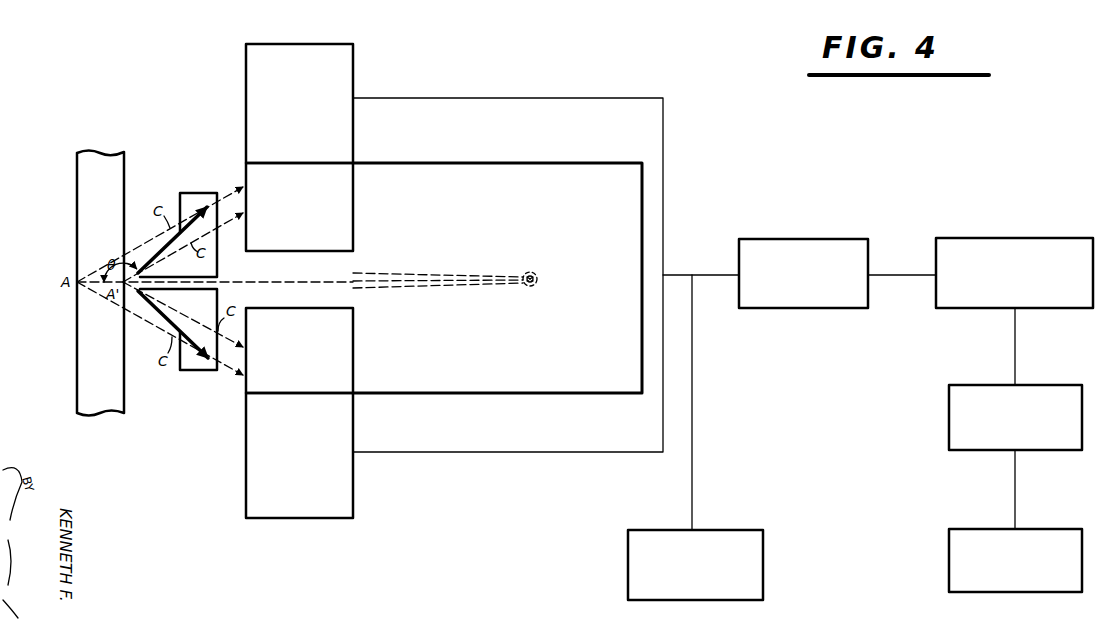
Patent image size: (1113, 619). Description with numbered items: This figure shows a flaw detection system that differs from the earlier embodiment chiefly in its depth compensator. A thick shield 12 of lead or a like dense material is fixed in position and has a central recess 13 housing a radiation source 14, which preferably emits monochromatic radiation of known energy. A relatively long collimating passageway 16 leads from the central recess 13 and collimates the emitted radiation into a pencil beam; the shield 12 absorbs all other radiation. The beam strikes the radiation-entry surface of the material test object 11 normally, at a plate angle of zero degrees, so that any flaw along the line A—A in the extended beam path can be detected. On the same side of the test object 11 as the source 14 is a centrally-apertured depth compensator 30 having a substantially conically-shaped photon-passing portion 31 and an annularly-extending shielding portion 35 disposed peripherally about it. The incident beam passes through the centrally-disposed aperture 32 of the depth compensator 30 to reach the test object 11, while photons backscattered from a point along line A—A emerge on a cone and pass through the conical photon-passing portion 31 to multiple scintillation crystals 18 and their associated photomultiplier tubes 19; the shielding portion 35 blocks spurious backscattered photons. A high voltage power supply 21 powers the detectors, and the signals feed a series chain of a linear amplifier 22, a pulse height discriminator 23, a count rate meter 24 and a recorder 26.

The material test object 11 is at (77, 190).
The thick shield 12 is at (476, 163).
The central recess 13 is at (538, 286).
The radiation source 14 is at (534, 273).
The collimating passageway 16 is at (456, 290).
The scintillation crystal 18 is at (246, 172).
The photomultiplier tube 19 is at (353, 86).
The high voltage power supply 21 is at (763, 555).
The linear amplifier 22 is at (842, 239).
The pulse height discriminator 23 is at (1016, 238).
The count rate meter 24 is at (1062, 385).
The recorder 26 is at (1038, 529).
The centrally-apertured depth compensator 30 is at (166, 320).
The photon-passing portion 31 is at (219, 210).
The centrally-disposed aperture 32 is at (155, 277).
The shielding portion 35 is at (190, 200).